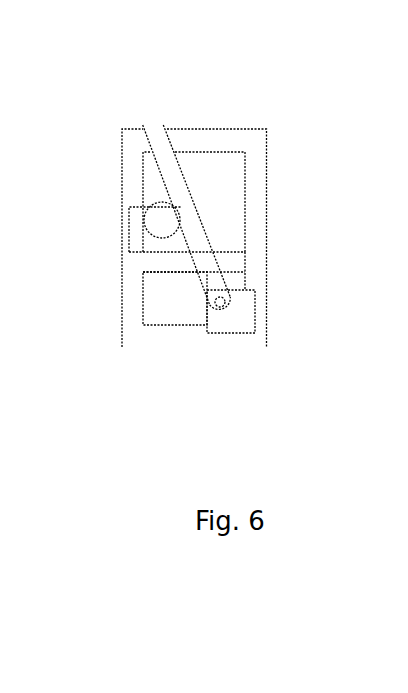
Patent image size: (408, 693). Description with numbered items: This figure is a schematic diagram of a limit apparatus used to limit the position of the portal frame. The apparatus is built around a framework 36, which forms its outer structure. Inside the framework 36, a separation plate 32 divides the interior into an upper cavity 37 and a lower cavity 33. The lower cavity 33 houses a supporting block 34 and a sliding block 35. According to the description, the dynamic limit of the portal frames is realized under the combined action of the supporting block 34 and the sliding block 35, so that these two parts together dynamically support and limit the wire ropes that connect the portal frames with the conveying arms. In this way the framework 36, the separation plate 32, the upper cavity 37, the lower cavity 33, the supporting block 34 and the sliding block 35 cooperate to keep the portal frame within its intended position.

The separation plate 32 is at (230, 243).
The lower cavity 33 is at (188, 300).
The supporting block 34 is at (163, 220).
The sliding block 35 is at (243, 333).
The framework 36 is at (264, 155).
The upper cavity 37 is at (199, 172).